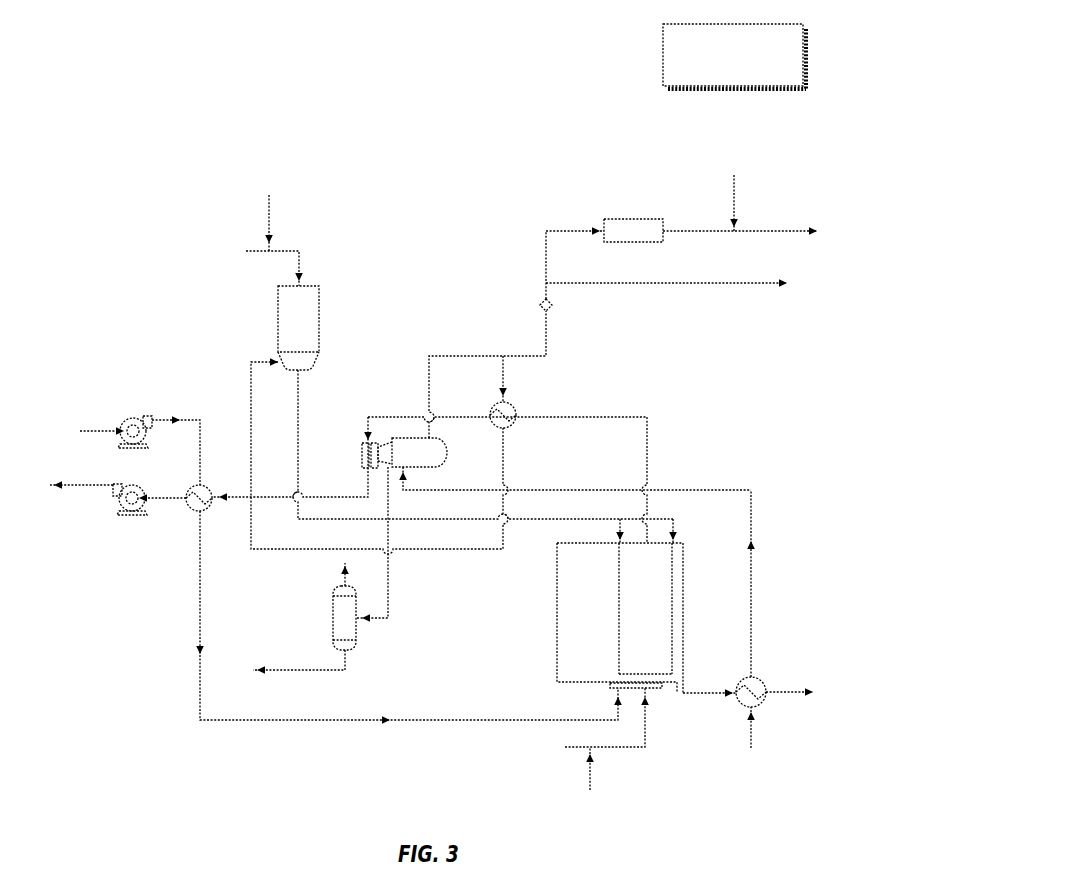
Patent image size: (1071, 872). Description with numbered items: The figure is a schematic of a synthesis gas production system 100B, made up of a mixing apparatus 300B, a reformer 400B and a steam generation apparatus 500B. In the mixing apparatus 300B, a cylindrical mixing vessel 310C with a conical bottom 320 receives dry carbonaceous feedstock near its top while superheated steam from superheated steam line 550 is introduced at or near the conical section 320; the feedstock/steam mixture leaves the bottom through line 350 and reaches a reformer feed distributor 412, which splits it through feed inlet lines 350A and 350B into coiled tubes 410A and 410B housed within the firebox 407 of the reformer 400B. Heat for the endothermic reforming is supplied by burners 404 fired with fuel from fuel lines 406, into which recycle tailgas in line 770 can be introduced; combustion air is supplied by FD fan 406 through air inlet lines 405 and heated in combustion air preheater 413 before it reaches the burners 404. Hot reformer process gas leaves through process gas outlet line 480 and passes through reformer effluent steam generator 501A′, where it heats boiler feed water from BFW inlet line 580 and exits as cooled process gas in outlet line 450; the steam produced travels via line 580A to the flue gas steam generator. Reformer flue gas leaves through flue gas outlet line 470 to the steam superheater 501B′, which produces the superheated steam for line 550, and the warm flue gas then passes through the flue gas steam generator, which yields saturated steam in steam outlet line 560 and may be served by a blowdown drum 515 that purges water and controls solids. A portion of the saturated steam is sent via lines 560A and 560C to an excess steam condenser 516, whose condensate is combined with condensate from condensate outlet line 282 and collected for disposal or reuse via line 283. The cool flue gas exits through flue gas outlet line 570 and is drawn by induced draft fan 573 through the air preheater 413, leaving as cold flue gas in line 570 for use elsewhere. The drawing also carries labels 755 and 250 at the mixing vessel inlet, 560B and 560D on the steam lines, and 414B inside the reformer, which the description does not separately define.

The synthesis gas production system 100B is at (140, 210).
The steam generation apparatus 500B is at (734, 56).
The feed stream 755 is at (266, 219).
The feed conduit 250 is at (302, 258).
The mixing apparatus 300B is at (303, 329).
The mixing vessel 310C is at (278, 302).
The conical bottom 320 is at (312, 368).
The reformer feed inlet line 350 is at (299, 407).
The feed inlet line 350A is at (620, 521).
The feed inlet line 350B is at (677, 524).
The reformer feed distributor 412 is at (668, 524).
The superheated steam line 550 is at (252, 372).
The FD fan 406 is at (133, 418).
The air inlet line 405 is at (195, 421).
The combustion air preheater 413 is at (192, 487).
The steam generator flue gas outlet line 570 is at (366, 497).
The induced draft fan 573 is at (117, 500).
The steam generator steam outlet line 560 is at (456, 355).
The steam line 560A is at (548, 334).
The vapor stream to heat exchanger 560B is at (505, 376).
The steam superheater 501B′ is at (491, 412).
The steam line 560C is at (563, 230).
The excess steam condenser 516 is at (625, 219).
The condensate outlet line 282 is at (733, 197).
The condensate collection line 283 is at (756, 230).
The vapor stream outlet 560D is at (634, 283).
The reformer flue gas outlet line 470 is at (648, 447).
The blowdown drum 515 is at (332, 618).
The reformer 400B is at (650, 635).
The coiled tube 410A is at (618, 594).
The coiled tube 410B is at (674, 570).
The reactor bottom 414B is at (642, 673).
The firebox 407 is at (683, 641).
The burner 404 is at (656, 688).
The reformer process gas outlet line 480 is at (710, 690).
The reformer effluent steam generator 501A′ is at (742, 704).
The steam generator process gas outlet line 450 is at (793, 690).
The BFW inlet line 580 is at (753, 742).
The steam line 580A is at (753, 591).
The recycle tailgas line 770 is at (585, 781).